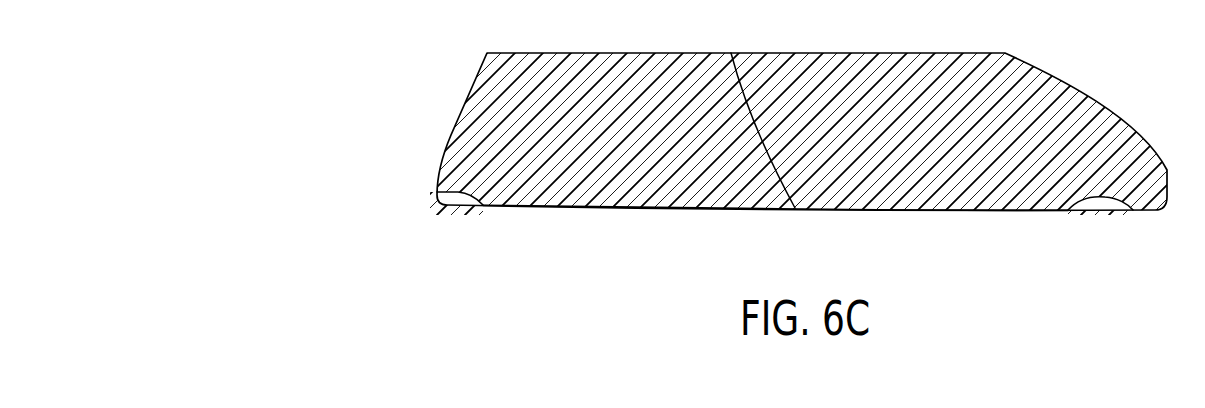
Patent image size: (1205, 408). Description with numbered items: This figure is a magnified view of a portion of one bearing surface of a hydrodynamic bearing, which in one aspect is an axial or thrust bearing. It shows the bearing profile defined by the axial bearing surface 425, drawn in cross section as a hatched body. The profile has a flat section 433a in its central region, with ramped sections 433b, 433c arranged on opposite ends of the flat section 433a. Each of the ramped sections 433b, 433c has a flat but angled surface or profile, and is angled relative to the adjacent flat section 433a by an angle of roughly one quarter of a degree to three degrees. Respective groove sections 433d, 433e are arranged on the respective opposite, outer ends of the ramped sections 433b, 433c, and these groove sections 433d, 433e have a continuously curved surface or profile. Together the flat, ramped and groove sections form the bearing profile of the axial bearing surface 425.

The axial bearing surface 425 is at (748, 210).
The flat section 433a is at (731, 53).
The ramped section 433b is at (645, 210).
The ramped section 433c is at (930, 211).
The groove section 433d is at (463, 194).
The groove section 433e is at (1097, 199).